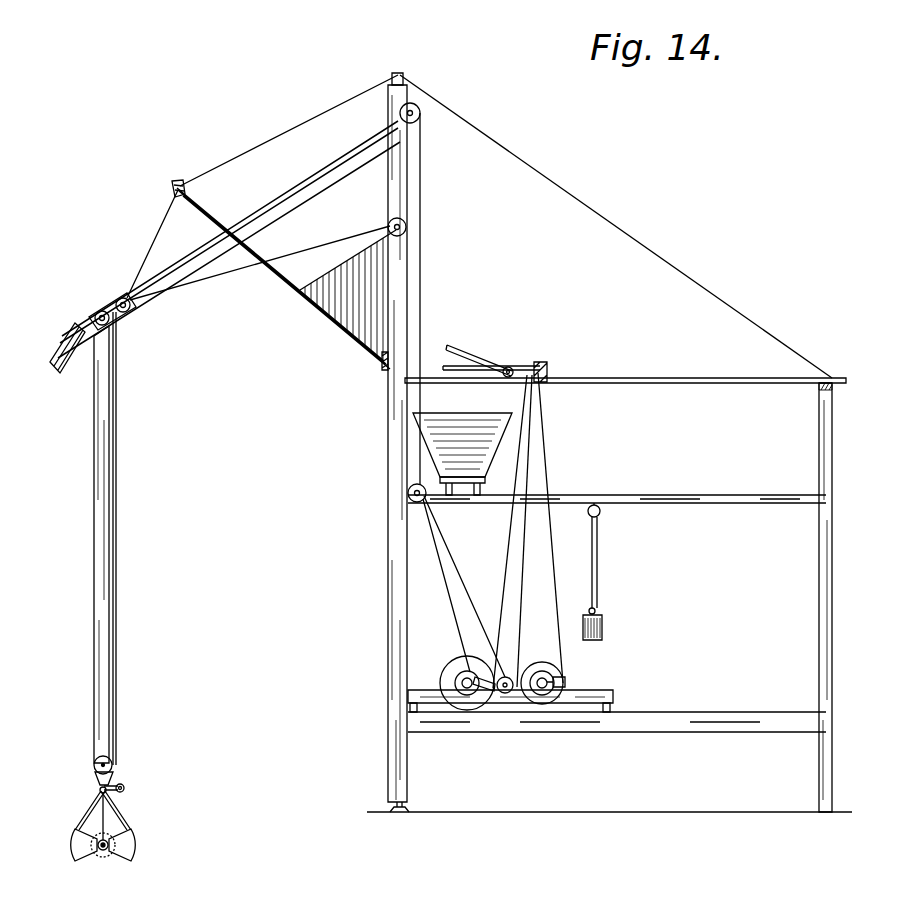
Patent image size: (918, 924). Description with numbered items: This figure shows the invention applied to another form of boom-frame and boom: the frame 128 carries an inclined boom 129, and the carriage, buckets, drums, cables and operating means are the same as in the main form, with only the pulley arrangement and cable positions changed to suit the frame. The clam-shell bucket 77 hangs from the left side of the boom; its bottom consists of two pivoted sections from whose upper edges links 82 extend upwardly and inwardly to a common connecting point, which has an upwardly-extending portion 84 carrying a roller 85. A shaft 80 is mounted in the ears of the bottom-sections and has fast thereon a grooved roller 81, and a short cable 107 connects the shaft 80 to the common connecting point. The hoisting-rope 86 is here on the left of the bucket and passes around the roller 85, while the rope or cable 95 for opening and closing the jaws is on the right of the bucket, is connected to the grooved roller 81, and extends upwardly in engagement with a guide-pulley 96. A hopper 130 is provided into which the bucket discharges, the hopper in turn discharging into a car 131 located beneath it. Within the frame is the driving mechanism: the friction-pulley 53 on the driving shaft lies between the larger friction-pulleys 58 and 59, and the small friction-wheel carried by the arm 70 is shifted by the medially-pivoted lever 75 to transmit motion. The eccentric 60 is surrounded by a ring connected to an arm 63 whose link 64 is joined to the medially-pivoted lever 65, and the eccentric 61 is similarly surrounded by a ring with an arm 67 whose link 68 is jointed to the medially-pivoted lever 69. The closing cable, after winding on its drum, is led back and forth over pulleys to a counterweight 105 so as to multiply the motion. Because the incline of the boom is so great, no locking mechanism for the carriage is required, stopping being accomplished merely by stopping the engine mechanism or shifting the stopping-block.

The frame 128 is at (389, 577).
The boom 129 is at (178, 290).
The hopper 130 is at (352, 307).
The medially-pivoted lever 75 is at (490, 364).
The medially-pivoted lever 69 is at (465, 374).
The medially-pivoted lever 65 is at (537, 365).
The car 131 is at (473, 420).
The link 68 is at (504, 600).
The arm 70 is at (514, 637).
The link 64 is at (559, 600).
The counterweight 105 is at (603, 627).
The friction-pulley 59 is at (475, 712).
The friction-pulley 58 is at (550, 703).
The eccentric 61 is at (458, 673).
The eccentric 60 is at (540, 670).
The arm 67 is at (492, 694).
The friction-pulley 53 is at (500, 693).
The arm 63 is at (566, 680).
The hoisting-rope 86 is at (95, 702).
The rope or cable 95 is at (120, 697).
The roller 85 is at (107, 760).
The upwardly-extending portion 84 is at (112, 777).
The guide-pulley 96 is at (124, 787).
The links 82 is at (90, 807).
The short cable 107 is at (100, 817).
The clam-shell bucket 77 is at (133, 847).
The grooved roller 81 is at (100, 852).
The shaft 80 is at (105, 852).